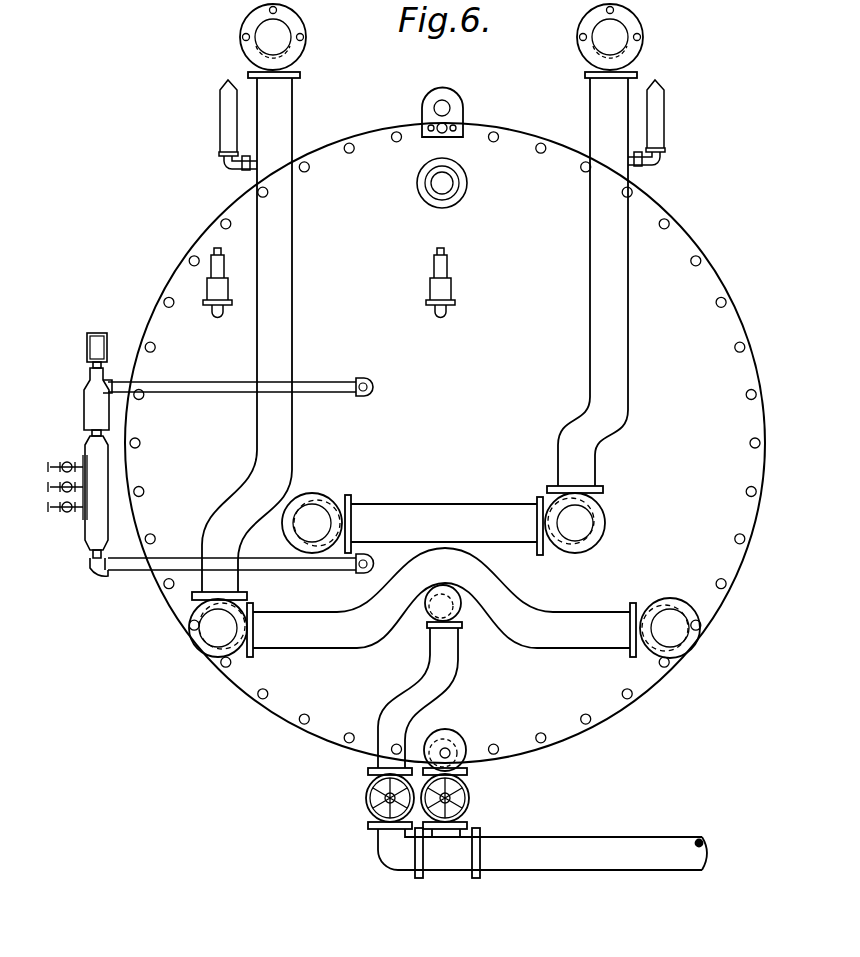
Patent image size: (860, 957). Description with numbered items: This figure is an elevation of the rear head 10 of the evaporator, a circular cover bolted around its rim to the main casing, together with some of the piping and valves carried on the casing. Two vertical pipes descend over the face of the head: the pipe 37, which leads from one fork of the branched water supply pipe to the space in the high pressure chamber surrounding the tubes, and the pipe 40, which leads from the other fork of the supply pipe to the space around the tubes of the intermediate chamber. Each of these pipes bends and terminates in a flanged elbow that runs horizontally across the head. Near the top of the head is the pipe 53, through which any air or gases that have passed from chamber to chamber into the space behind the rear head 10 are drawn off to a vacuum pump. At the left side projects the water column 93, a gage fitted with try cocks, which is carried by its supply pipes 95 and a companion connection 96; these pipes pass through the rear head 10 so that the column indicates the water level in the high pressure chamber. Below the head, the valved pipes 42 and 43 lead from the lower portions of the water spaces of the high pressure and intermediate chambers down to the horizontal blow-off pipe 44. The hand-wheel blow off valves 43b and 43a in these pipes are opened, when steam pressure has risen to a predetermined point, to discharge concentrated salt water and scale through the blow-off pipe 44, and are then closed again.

The rear head 10 is at (728, 366).
The pipe 37 is at (612, 318).
The pipe 40 is at (280, 232).
The valved pipe 42 is at (447, 673).
The valved pipe 43 is at (447, 752).
The blow off valve 43a is at (468, 803).
The blow off valve 43b is at (366, 800).
The blow-off pipe 44 is at (580, 856).
The pipe 53 is at (447, 186).
The water column 93 is at (95, 532).
The supply pipes 95 is at (205, 382).
The pipe 96 is at (168, 568).